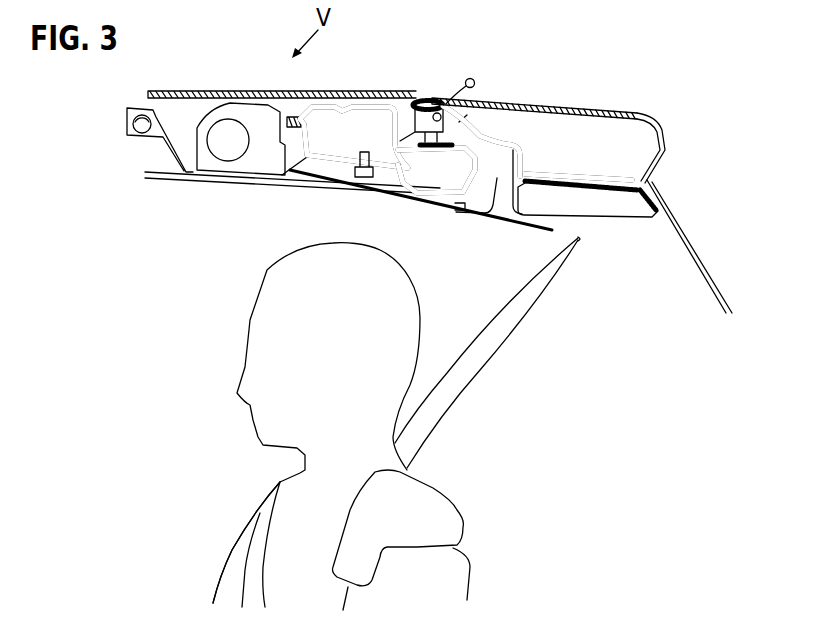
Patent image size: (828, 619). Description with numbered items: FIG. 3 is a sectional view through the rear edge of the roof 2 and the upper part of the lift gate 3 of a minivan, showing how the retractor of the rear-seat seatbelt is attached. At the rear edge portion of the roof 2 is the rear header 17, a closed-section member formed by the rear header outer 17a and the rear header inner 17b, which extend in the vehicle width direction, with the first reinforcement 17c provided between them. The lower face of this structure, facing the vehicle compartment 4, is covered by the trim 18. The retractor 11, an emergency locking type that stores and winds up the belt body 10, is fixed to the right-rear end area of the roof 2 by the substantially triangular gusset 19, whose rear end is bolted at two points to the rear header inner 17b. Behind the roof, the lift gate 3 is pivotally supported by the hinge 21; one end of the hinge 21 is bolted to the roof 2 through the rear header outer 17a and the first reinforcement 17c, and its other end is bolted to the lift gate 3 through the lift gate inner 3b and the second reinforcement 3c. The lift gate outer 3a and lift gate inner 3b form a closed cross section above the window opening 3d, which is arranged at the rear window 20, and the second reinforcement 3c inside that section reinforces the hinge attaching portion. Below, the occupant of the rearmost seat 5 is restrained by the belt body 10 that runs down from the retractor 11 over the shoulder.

The roof 2 is at (168, 90).
The lift gate 3 is at (672, 124).
The lift gate outer 3a is at (548, 106).
The lift gate inner 3b is at (553, 189).
The second reinforcement 3c is at (560, 173).
The window opening 3d is at (655, 205).
The vehicle compartment 4 is at (180, 272).
The seat 5 is at (478, 527).
The belt body 10 is at (255, 593).
The retractor 11 is at (256, 105).
The rear header 17 is at (300, 116).
The rear header outer 17a is at (352, 104).
The rear header inner 17b is at (410, 180).
The first reinforcement 17c is at (328, 156).
The trim 18 is at (220, 183).
The gusset 19 is at (166, 150).
The rear window 20 is at (714, 277).
The hinge 21 is at (420, 101).